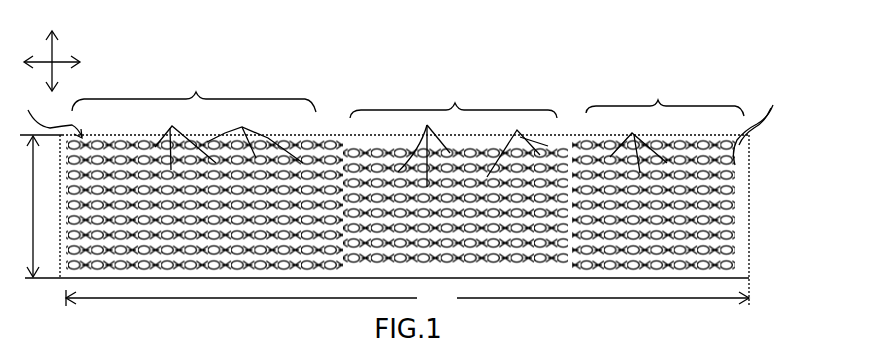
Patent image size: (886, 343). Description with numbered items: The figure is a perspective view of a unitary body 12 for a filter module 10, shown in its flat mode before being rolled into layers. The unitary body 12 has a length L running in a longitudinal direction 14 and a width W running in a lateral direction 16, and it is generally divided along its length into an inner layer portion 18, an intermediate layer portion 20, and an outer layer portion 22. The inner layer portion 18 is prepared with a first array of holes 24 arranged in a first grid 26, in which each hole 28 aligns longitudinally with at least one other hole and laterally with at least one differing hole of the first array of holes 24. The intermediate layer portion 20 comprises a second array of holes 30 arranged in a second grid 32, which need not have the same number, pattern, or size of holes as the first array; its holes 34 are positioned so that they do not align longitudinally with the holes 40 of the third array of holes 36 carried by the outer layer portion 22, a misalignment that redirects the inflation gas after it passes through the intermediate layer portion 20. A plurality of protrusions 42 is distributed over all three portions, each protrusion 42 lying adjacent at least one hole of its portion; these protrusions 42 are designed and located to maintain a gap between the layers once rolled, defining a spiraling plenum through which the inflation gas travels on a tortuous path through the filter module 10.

The filter module 10 is at (695, 94).
The unitary body 12 is at (470, 144).
The longitudinal direction 14 is at (49, 49).
The lateral direction 16 is at (68, 96).
The inner layer portion 18 is at (658, 177).
The intermediate layer portion 20 is at (455, 171).
The outer layer portion 22 is at (204, 170).
The first array of holes 24 is at (745, 188).
The first grid 26 is at (733, 226).
The hole 28 is at (758, 125).
The second array of holes 30 is at (533, 175).
The second grid 32 is at (370, 163).
The holes 34 is at (424, 148).
The third array of holes 36 is at (97, 245).
The hole 40 is at (181, 137).
The protrusion 42 is at (437, 140).
The width W is at (33, 206).
The length L is at (407, 298).